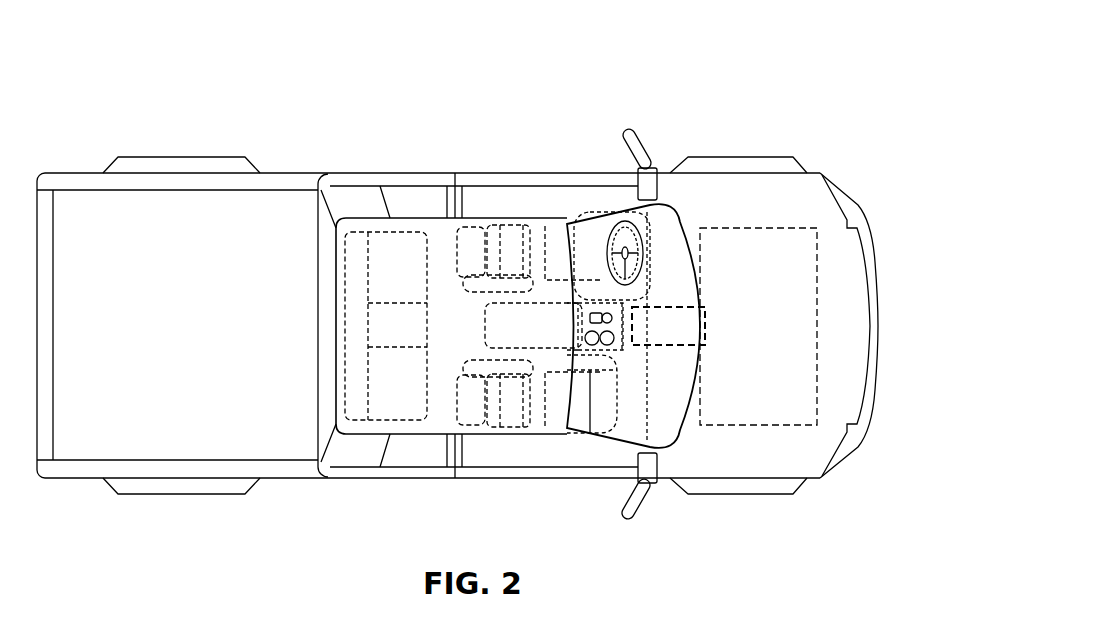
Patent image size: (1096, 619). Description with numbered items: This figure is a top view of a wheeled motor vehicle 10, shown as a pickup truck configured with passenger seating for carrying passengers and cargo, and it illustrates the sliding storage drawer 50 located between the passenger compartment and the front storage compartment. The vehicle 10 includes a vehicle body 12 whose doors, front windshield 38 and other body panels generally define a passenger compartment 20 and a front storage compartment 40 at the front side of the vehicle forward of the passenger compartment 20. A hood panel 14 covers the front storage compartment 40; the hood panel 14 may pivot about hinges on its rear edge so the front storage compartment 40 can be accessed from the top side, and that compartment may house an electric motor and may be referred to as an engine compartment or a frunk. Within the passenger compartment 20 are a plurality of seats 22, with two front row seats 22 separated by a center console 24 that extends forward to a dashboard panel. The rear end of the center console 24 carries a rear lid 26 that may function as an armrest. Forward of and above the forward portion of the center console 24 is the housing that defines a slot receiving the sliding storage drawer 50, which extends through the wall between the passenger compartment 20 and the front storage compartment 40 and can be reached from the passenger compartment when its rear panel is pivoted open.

The wheeled motor vehicle 10 is at (665, 82).
The vehicle body 12 is at (575, 478).
The hood panel 14 is at (845, 287).
The passenger compartment 20 is at (443, 270).
The seats 22 is at (512, 243).
The center console 24 is at (607, 307).
The rear lid 26 is at (495, 332).
The front windshield 38 is at (662, 232).
The front storage compartment 40 is at (757, 227).
The sliding storage drawer 50 is at (670, 350).